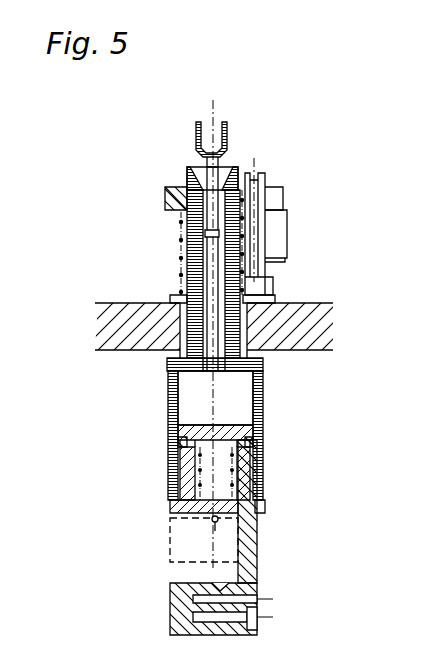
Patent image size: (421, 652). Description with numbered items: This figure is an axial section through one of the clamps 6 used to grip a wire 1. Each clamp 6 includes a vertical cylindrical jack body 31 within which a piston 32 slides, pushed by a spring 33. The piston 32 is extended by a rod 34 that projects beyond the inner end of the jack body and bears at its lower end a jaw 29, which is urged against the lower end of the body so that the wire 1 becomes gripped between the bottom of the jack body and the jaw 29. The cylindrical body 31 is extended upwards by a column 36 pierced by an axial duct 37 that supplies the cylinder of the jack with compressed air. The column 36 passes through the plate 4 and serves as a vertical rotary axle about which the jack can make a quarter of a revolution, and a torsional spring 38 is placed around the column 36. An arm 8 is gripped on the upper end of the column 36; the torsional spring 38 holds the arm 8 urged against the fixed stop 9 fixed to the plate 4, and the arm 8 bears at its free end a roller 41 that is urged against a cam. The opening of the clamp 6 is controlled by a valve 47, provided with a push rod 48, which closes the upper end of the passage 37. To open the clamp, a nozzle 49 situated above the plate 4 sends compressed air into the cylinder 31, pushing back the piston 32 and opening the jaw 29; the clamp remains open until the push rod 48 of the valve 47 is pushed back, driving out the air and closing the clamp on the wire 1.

The wire 1 is at (212, 521).
The plate 4 is at (122, 341).
The clamp 6 is at (168, 403).
The arm 8 is at (270, 196).
The fixed stop 9 is at (263, 178).
The jaw 29 is at (170, 605).
The cylindrical jack body 31 is at (262, 398).
The piston 32 is at (255, 431).
The spring 33 is at (258, 472).
The rod 34 is at (250, 532).
The column 36 is at (183, 277).
The axial duct 37 is at (200, 262).
The torsional spring 38 is at (180, 237).
The roller 41 is at (272, 240).
The valve 47 is at (170, 190).
The push rod 48 is at (195, 165).
The nozzle 49 is at (229, 128).